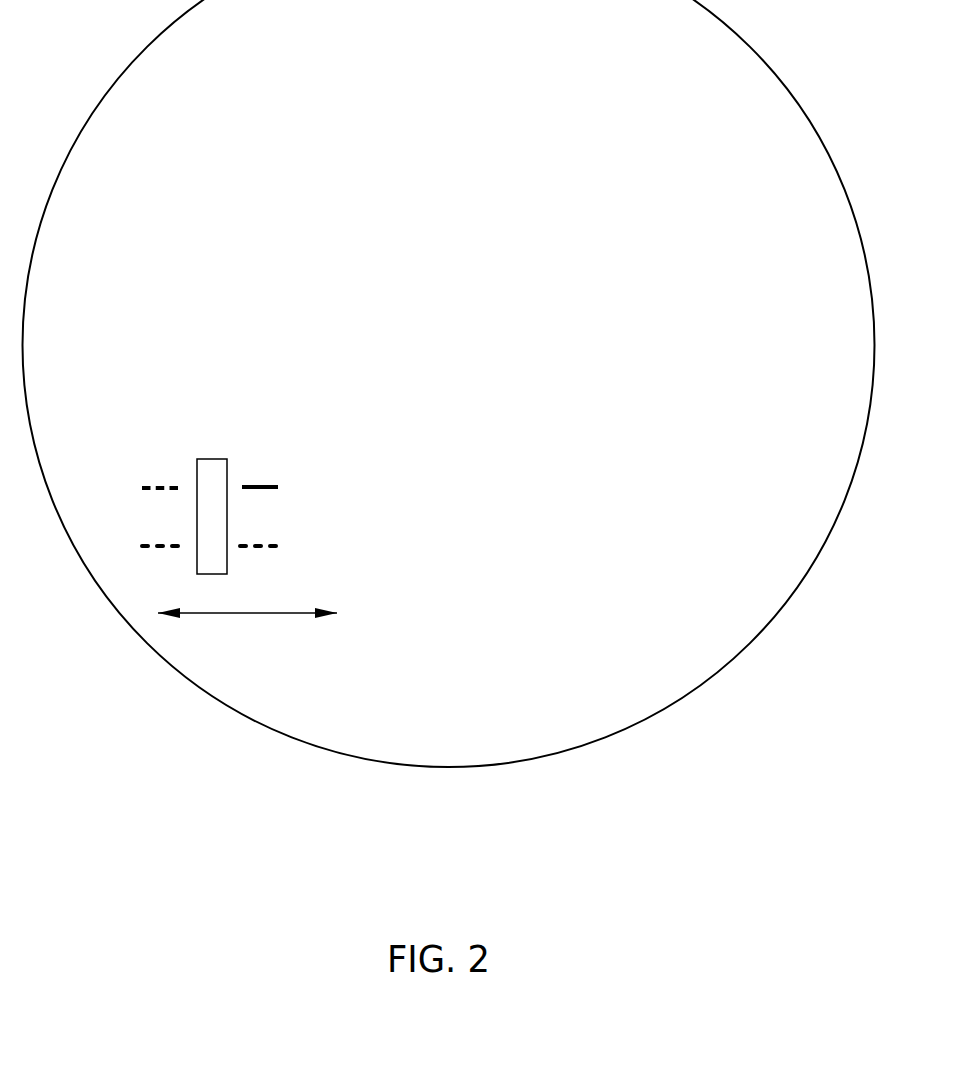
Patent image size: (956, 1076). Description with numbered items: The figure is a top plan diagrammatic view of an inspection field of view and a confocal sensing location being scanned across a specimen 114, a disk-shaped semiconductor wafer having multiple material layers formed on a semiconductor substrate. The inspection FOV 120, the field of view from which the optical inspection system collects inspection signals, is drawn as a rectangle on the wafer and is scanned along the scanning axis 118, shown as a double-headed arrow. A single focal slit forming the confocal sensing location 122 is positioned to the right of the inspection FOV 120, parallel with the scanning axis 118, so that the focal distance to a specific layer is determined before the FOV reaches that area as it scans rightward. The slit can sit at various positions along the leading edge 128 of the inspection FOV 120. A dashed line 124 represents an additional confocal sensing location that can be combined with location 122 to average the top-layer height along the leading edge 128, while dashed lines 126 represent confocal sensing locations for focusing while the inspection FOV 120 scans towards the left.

The specimen 114 is at (577, 232).
The scanning axis 118 is at (291, 615).
The inspection FOV 120 is at (207, 459).
The confocal sensing location 122 is at (270, 487).
The additional confocal sensing location 124 is at (265, 550).
The confocal sensing locations 126 is at (157, 487).
The leading edge 128 is at (238, 475).